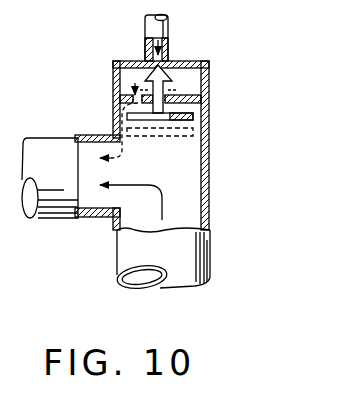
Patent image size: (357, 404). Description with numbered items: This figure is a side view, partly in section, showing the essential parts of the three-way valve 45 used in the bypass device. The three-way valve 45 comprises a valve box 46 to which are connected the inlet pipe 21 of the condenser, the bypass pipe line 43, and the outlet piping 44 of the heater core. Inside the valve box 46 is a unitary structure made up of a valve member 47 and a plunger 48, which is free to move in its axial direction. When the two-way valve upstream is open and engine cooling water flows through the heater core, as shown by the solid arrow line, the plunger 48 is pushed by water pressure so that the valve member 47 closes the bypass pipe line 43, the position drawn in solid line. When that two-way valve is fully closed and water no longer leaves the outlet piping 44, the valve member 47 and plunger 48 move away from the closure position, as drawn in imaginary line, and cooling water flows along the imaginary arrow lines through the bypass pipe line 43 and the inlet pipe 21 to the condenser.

The inlet pipe 21 is at (46, 138).
The bypass pipe line 43 is at (146, 28).
The outlet piping 44 is at (212, 254).
The three-way valve 45 is at (212, 174).
The valve box 46 is at (209, 82).
The valve member 47 is at (172, 62).
The plunger 48 is at (198, 118).